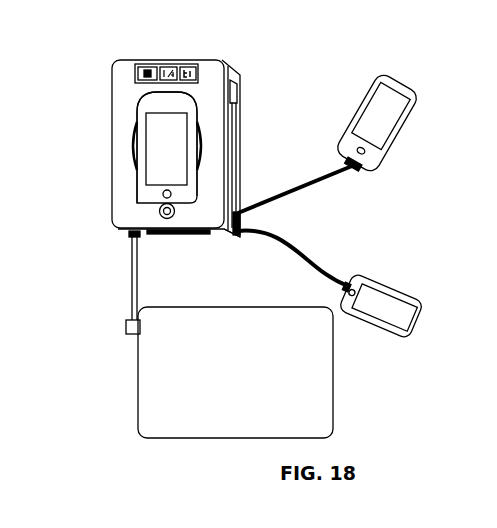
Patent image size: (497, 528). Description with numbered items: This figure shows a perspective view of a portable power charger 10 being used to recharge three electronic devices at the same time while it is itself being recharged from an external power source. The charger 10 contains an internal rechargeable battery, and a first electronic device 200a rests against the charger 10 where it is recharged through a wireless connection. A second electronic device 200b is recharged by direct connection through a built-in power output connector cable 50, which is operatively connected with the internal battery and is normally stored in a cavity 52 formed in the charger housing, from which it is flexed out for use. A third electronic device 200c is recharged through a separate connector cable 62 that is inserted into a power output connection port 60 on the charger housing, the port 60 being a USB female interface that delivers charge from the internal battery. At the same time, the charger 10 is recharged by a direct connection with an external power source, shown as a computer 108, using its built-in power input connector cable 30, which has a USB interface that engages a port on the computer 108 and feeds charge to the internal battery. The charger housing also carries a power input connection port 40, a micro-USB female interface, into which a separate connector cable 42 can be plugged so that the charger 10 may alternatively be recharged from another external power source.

The portable power charger 10 is at (107, 115).
The electronic device 200a is at (187, 103).
The electronic device 200b is at (383, 135).
The electronic device 200c is at (408, 301).
The cavity 52 is at (238, 91).
The power output connector cable 50 is at (290, 188).
The power input connector cable 30 is at (209, 237).
The power output connection port 60 is at (241, 236).
The power input connection port 40 is at (127, 234).
The connector cable 42 is at (131, 271).
The connector cable 62 is at (317, 268).
The computer 108 is at (180, 432).